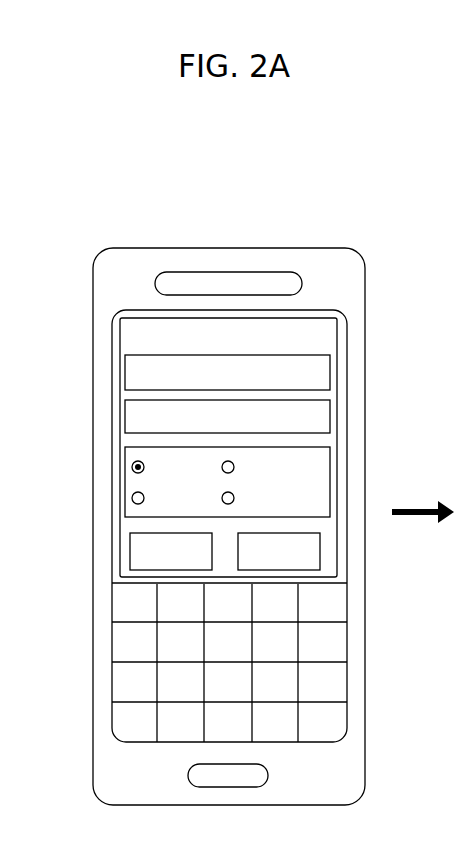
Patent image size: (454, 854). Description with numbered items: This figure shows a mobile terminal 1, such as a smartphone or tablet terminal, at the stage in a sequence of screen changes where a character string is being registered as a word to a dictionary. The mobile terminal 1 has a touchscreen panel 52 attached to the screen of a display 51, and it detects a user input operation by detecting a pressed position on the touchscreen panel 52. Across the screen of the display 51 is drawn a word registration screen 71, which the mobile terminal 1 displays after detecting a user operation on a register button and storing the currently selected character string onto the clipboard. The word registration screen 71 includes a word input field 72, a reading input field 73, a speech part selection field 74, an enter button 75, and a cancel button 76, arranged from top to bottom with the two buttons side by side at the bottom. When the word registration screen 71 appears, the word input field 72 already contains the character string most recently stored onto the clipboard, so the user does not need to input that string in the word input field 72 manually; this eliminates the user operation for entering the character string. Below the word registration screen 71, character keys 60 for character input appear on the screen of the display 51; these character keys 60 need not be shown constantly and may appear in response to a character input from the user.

The mobile terminal 1 is at (333, 222).
The display 51 is at (333, 318).
The touchscreen panel 52 is at (228, 447).
The character keys 60 is at (331, 648).
The word registration screen 71 is at (326, 336).
The word input field 72 is at (326, 373).
The reading input field 73 is at (323, 420).
The speech part selection field 74 is at (323, 465).
The enter button 75 is at (138, 553).
The cancel button 76 is at (316, 537).